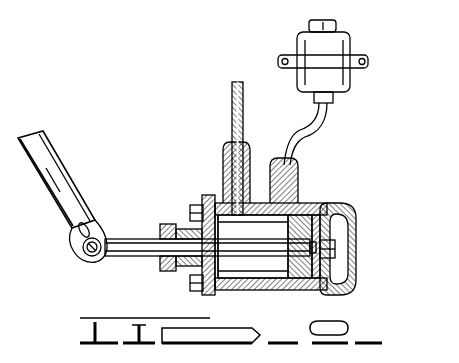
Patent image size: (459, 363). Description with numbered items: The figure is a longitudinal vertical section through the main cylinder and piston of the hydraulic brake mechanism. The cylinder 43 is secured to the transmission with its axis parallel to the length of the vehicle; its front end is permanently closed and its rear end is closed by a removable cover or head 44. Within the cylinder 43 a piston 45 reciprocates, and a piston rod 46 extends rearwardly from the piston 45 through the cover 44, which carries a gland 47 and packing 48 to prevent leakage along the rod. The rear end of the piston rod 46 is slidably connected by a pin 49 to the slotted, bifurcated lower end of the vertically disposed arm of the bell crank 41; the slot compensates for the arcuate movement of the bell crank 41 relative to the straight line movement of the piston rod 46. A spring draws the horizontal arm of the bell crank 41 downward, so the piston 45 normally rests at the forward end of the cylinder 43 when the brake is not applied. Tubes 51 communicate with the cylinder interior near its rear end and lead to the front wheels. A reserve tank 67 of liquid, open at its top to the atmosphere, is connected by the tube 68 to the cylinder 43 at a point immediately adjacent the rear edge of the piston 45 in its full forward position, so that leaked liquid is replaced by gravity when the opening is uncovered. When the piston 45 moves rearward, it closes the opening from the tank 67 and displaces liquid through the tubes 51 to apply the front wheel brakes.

The bell crank 41 is at (52, 147).
The cylinder 43 is at (258, 290).
The removable cover or head 44 is at (210, 200).
The piston 45 is at (290, 268).
The piston rod 46 is at (240, 248).
The gland 47 is at (165, 229).
The packing 48 is at (190, 278).
The pin 49 is at (84, 257).
The pipes or tubes 51 is at (231, 101).
The reserve tank 67 is at (303, 42).
The tube 68 is at (318, 125).